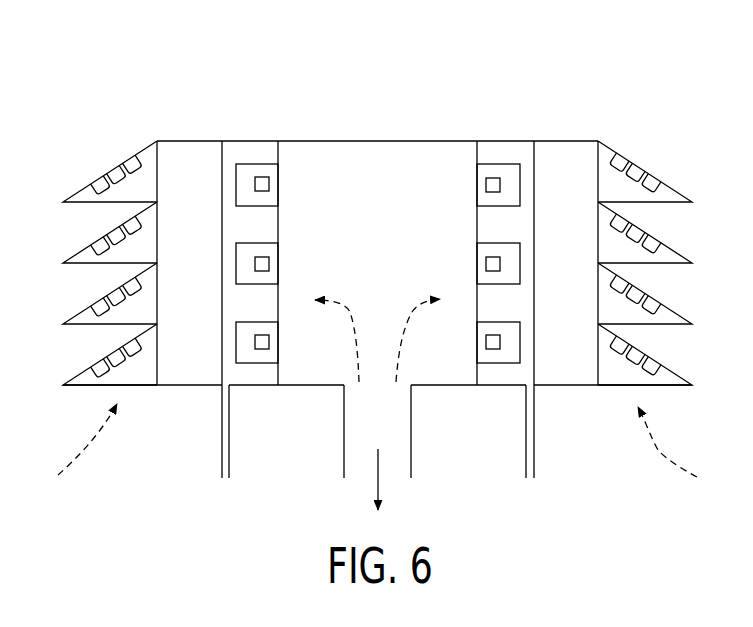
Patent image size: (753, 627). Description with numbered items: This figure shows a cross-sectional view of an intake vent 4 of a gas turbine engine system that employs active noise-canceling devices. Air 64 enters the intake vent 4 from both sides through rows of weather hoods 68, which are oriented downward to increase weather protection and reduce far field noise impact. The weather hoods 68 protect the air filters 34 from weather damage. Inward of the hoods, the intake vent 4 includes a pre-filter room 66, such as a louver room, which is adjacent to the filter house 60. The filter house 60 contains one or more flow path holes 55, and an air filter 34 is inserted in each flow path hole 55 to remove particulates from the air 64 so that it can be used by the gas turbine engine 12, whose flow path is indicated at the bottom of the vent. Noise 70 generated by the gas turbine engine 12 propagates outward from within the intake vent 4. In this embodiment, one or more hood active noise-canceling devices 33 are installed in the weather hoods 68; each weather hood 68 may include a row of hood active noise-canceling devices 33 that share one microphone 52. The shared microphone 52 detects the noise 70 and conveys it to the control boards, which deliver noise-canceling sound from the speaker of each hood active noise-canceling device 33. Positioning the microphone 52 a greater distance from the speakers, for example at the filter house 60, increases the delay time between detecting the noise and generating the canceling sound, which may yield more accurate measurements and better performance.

The intake vent 4 is at (612, 47).
The gas turbine engine 12 is at (380, 474).
The hood active noise-canceling device 33 is at (99, 304).
The air filter 34 is at (269, 185).
The microphone 52 is at (115, 234).
The flow path hole 55 is at (495, 243).
The filter house 60 is at (278, 125).
The air 64 is at (660, 452).
The pre-filter room 66 is at (582, 150).
The weather hood 68 is at (88, 186).
The noise 70 is at (349, 312).